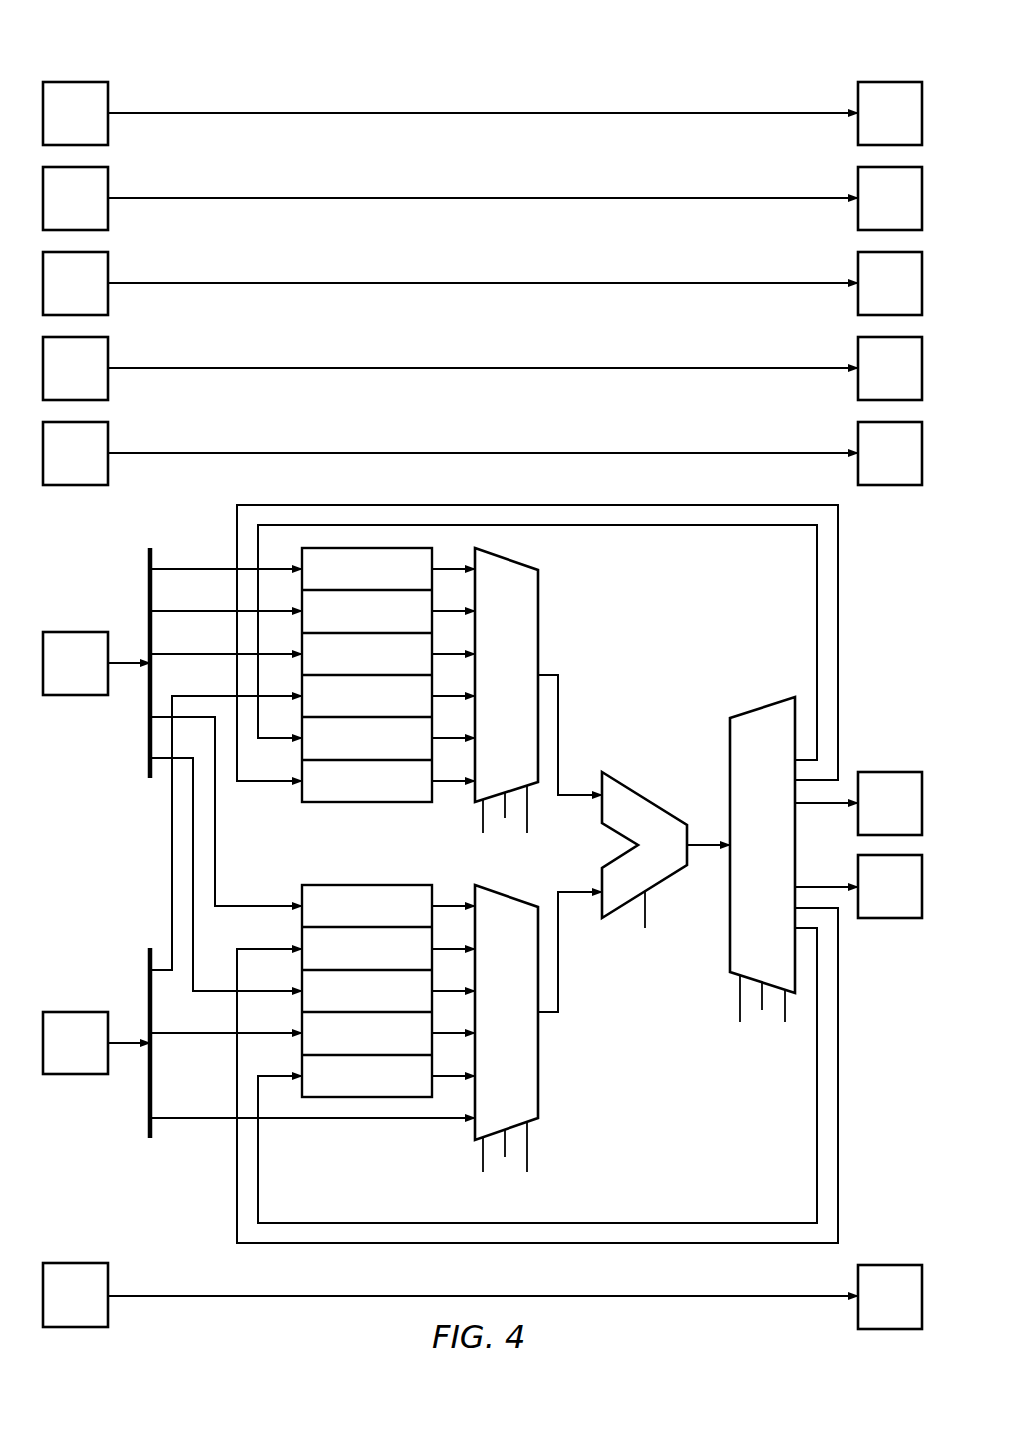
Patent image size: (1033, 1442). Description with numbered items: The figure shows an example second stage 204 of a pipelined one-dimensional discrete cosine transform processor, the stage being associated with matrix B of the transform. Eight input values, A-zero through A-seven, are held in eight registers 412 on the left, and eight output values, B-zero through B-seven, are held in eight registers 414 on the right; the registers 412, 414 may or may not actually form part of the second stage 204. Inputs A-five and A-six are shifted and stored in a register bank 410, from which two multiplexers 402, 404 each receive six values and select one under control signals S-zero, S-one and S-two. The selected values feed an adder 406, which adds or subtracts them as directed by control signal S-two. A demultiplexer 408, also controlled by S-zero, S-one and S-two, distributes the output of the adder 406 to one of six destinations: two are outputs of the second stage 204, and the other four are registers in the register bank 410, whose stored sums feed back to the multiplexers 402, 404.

The registers 412 is at (72, 74).
The registers 414 is at (890, 74).
The second stage 204 is at (655, 84).
The multiplexer 402 is at (486, 687).
The multiplexer 404 is at (486, 1024).
The adder 406 is at (645, 796).
The demultiplexer 408 is at (743, 856).
The register bank 410 is at (356, 814).